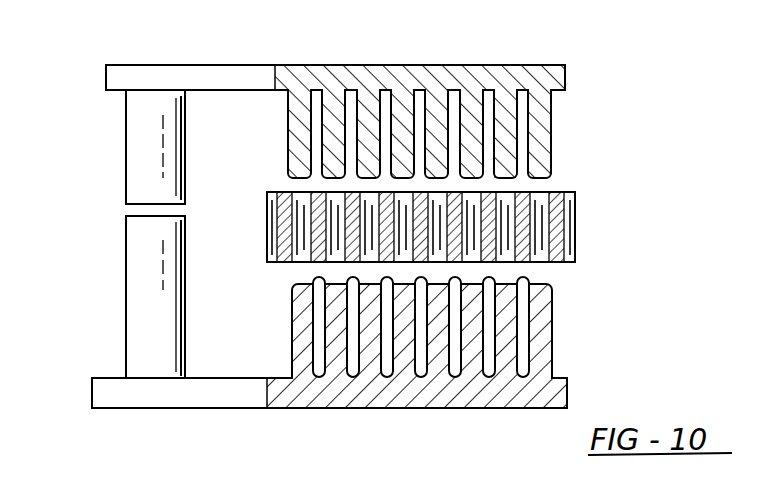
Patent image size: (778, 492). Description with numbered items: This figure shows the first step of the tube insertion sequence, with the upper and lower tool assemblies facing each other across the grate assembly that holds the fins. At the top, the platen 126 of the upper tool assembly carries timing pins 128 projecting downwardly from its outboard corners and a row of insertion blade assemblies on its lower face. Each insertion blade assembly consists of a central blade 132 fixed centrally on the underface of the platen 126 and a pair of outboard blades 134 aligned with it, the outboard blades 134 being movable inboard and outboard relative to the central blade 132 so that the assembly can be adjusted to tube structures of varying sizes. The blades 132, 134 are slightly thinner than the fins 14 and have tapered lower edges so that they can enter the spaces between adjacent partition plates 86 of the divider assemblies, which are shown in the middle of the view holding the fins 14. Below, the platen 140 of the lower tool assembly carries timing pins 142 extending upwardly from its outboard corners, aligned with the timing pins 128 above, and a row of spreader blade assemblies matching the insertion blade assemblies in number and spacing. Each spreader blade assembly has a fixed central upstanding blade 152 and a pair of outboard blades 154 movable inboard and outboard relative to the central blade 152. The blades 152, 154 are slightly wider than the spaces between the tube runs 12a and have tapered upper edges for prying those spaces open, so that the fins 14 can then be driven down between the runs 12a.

The platen 126 is at (388, 92).
The timing pins 128 is at (126, 172).
The central blade 132 is at (388, 121).
The outboard blades 134 is at (551, 155).
The fins 14 is at (448, 224).
The partition plate 86 is at (570, 240).
The parallel runs 12a is at (318, 337).
The platen 140 is at (383, 369).
The timing pins 142 is at (126, 325).
The central upstanding blade 152 is at (383, 342).
The outboard blades 154 is at (383, 342).